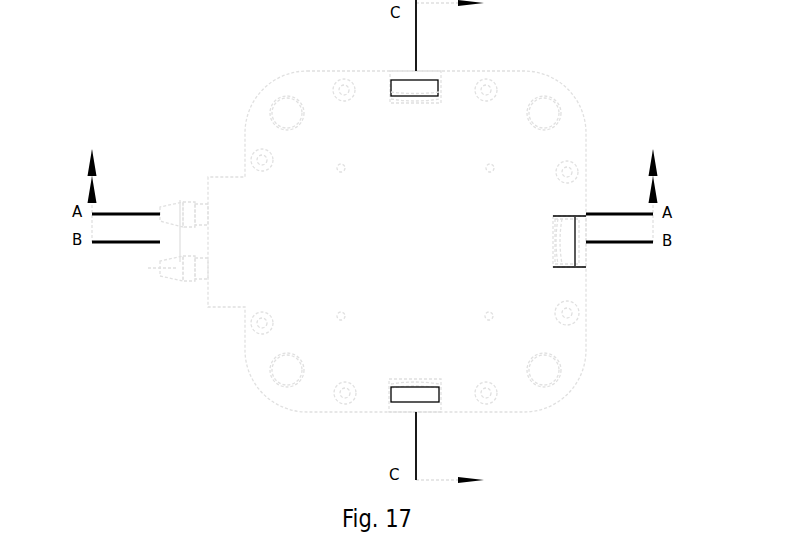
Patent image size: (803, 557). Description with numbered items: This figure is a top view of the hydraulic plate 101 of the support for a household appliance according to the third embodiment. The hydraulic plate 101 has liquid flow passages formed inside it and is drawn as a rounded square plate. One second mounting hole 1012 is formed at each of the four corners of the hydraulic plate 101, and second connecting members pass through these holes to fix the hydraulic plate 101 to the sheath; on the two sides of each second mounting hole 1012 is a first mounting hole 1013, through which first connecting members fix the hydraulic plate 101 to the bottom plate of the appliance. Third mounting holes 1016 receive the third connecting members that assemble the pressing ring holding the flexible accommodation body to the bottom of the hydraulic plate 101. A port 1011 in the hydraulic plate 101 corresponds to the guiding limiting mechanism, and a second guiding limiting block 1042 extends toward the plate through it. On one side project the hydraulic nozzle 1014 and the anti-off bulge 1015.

The hydraulic plate 101 is at (537, 338).
The port 1011 is at (441, 92).
The second mounting hole 1012 is at (287, 113).
The first mounting hole 1013 is at (569, 313).
The hydraulic nozzle 1014 is at (164, 207).
The anti-off bulge 1015 is at (192, 282).
The third mounting hole 1016 is at (492, 320).
The second guiding limiting block 1042 is at (415, 88).